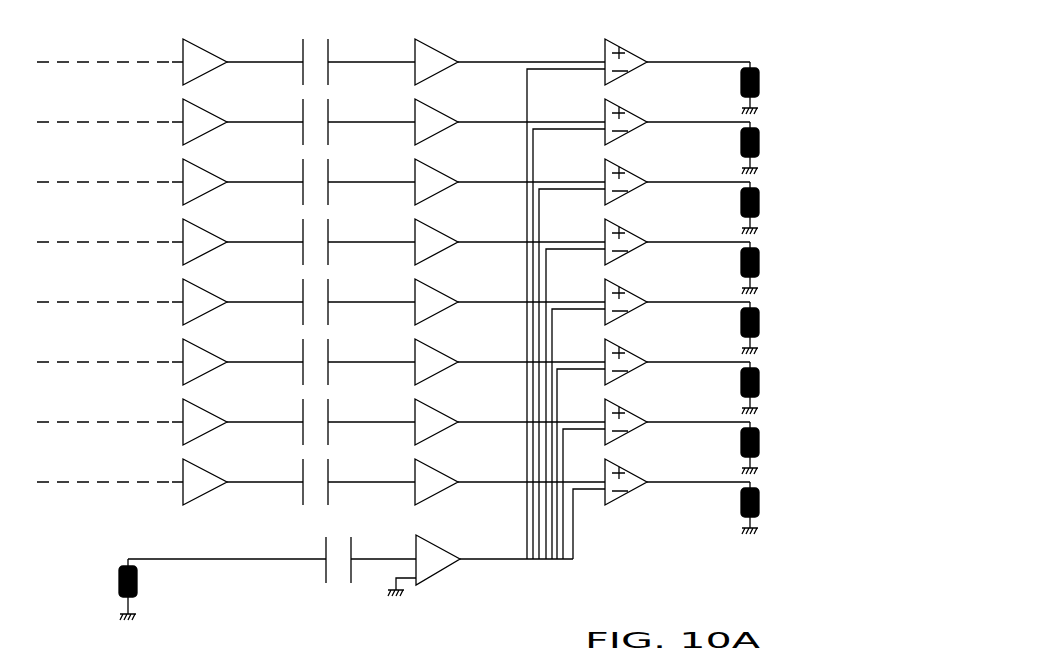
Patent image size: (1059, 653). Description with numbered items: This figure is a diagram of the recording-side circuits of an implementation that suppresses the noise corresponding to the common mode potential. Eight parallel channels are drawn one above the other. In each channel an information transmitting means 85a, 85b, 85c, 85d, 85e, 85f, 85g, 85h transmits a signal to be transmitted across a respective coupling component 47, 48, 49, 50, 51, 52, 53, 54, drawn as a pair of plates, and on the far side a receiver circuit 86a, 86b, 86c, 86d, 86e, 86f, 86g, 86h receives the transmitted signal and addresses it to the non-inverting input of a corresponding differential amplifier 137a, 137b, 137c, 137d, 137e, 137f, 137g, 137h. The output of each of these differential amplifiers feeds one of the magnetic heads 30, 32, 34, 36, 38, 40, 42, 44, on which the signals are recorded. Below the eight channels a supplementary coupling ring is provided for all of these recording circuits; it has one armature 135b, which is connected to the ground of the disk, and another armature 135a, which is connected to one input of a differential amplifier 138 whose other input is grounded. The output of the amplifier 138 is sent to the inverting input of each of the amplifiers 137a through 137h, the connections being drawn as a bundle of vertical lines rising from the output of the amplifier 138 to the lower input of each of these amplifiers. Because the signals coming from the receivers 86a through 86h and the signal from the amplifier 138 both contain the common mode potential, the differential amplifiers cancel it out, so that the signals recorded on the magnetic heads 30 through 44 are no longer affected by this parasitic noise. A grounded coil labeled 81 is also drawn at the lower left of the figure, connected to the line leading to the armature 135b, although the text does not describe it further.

The information transmitting means 85a is at (207, 52).
The information transmitting means 85b is at (207, 112).
The information transmitting means 85c is at (207, 172).
The information transmitting means 85d is at (207, 232).
The information transmitting means 85e is at (207, 292).
The information transmitting means 85f is at (207, 352).
The information transmitting means 85g is at (207, 412).
The information transmitting means 85h is at (207, 472).
The coupling component 47 is at (328, 51).
The coupling component 48 is at (328, 111).
The coupling component 49 is at (328, 171).
The coupling component 50 is at (328, 231).
The coupling component 51 is at (328, 291).
The coupling component 52 is at (328, 351).
The coupling component 53 is at (328, 411).
The coupling component 54 is at (328, 471).
The receiver circuit 86a is at (437, 45).
The receiver circuit 86b is at (437, 105).
The receiver circuit 86c is at (437, 165).
The receiver circuit 86d is at (437, 225).
The receiver circuit 86e is at (437, 285).
The receiver circuit 86f is at (437, 345).
The receiver circuit 86g is at (437, 405).
The receiver circuit 86h is at (437, 465).
The differential amplifier 137a is at (623, 47).
The differential amplifier 137b is at (623, 107).
The differential amplifier 137c is at (623, 167).
The differential amplifier 137d is at (623, 227).
The differential amplifier 137e is at (623, 287).
The differential amplifier 137f is at (623, 347).
The differential amplifier 137g is at (623, 407).
The differential amplifier 137h is at (623, 467).
The magnetic head 30 is at (756, 71).
The magnetic head 32 is at (756, 131).
The magnetic head 34 is at (756, 191).
The magnetic head 36 is at (756, 251).
The magnetic head 38 is at (756, 311).
The magnetic head 40 is at (756, 371).
The magnetic head 42 is at (756, 431).
The magnetic head 44 is at (756, 491).
The pickup coil 81 is at (74, 642).
The armature 135a is at (351, 548).
The armature 135b is at (326, 548).
The differential amplifier 138 is at (440, 572).